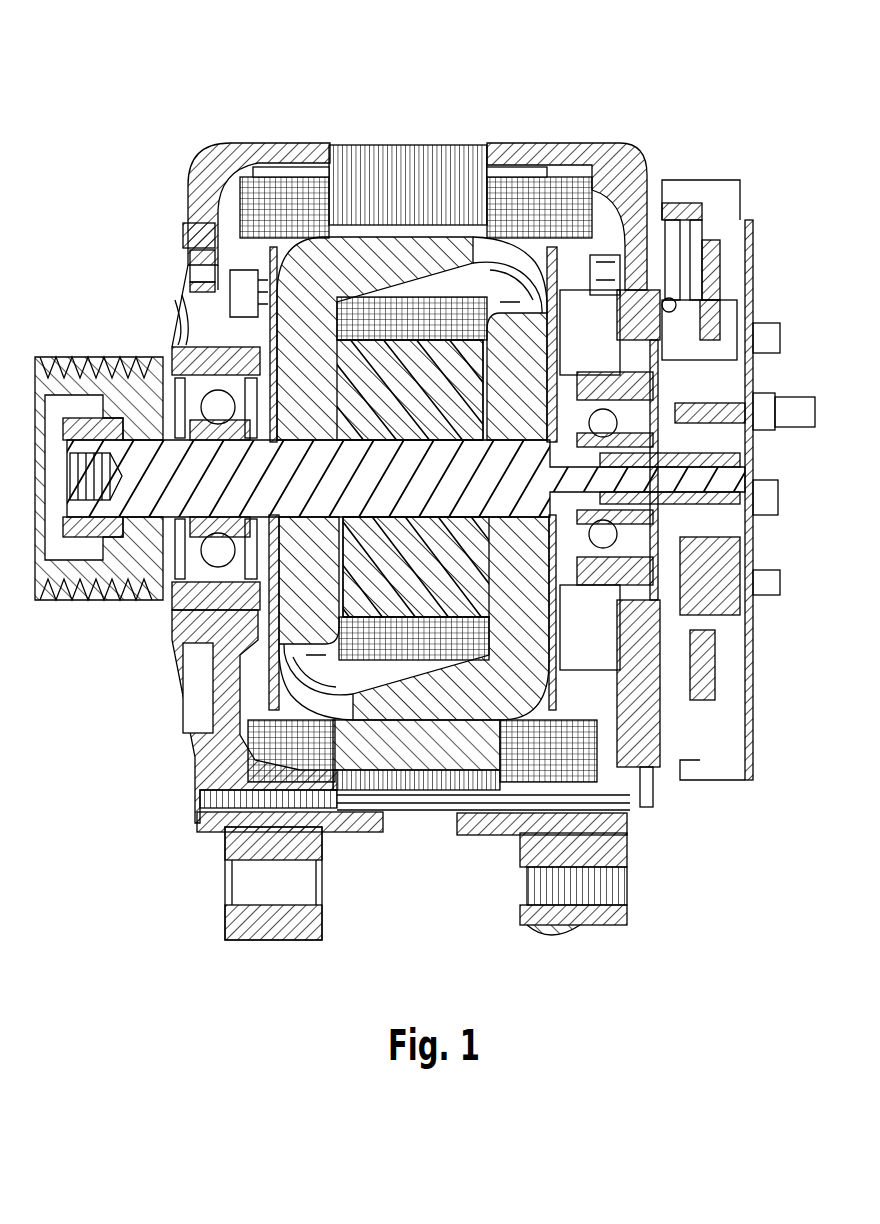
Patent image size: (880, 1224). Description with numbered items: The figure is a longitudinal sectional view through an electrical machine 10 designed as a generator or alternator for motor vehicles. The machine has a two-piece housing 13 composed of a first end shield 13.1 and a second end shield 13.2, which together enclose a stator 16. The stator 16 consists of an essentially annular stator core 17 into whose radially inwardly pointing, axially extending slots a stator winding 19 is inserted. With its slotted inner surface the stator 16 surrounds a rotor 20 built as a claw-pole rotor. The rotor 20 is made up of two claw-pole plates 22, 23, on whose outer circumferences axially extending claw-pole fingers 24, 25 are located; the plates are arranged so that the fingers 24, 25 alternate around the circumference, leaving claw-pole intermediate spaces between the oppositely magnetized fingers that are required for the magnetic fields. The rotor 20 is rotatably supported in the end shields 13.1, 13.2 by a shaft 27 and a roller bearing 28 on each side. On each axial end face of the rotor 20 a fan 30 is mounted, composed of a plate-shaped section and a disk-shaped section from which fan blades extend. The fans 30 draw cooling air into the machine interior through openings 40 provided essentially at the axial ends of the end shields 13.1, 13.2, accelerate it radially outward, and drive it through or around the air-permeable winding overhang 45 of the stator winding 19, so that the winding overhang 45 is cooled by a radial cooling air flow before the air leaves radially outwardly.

The electrical machine 10 is at (432, 541).
The housing 13 is at (527, 118).
The first end shield 13.1 is at (212, 183).
The second end shield 13.2 is at (626, 182).
The stator 16 is at (434, 410).
The stator core 17 is at (368, 150).
The stator winding 19 is at (548, 190).
The rotor 20 is at (380, 491).
The claw-pole plate 22 is at (376, 692).
The claw-pole plate 23 is at (545, 690).
The claw-pole finger 24 is at (410, 690).
The claw-pole finger 25 is at (445, 690).
The shaft 27 is at (150, 515).
The roller bearing 28 is at (205, 380).
The fan 30 is at (245, 285).
The opening 40 is at (200, 300).
The winding overhang 45 is at (256, 210).